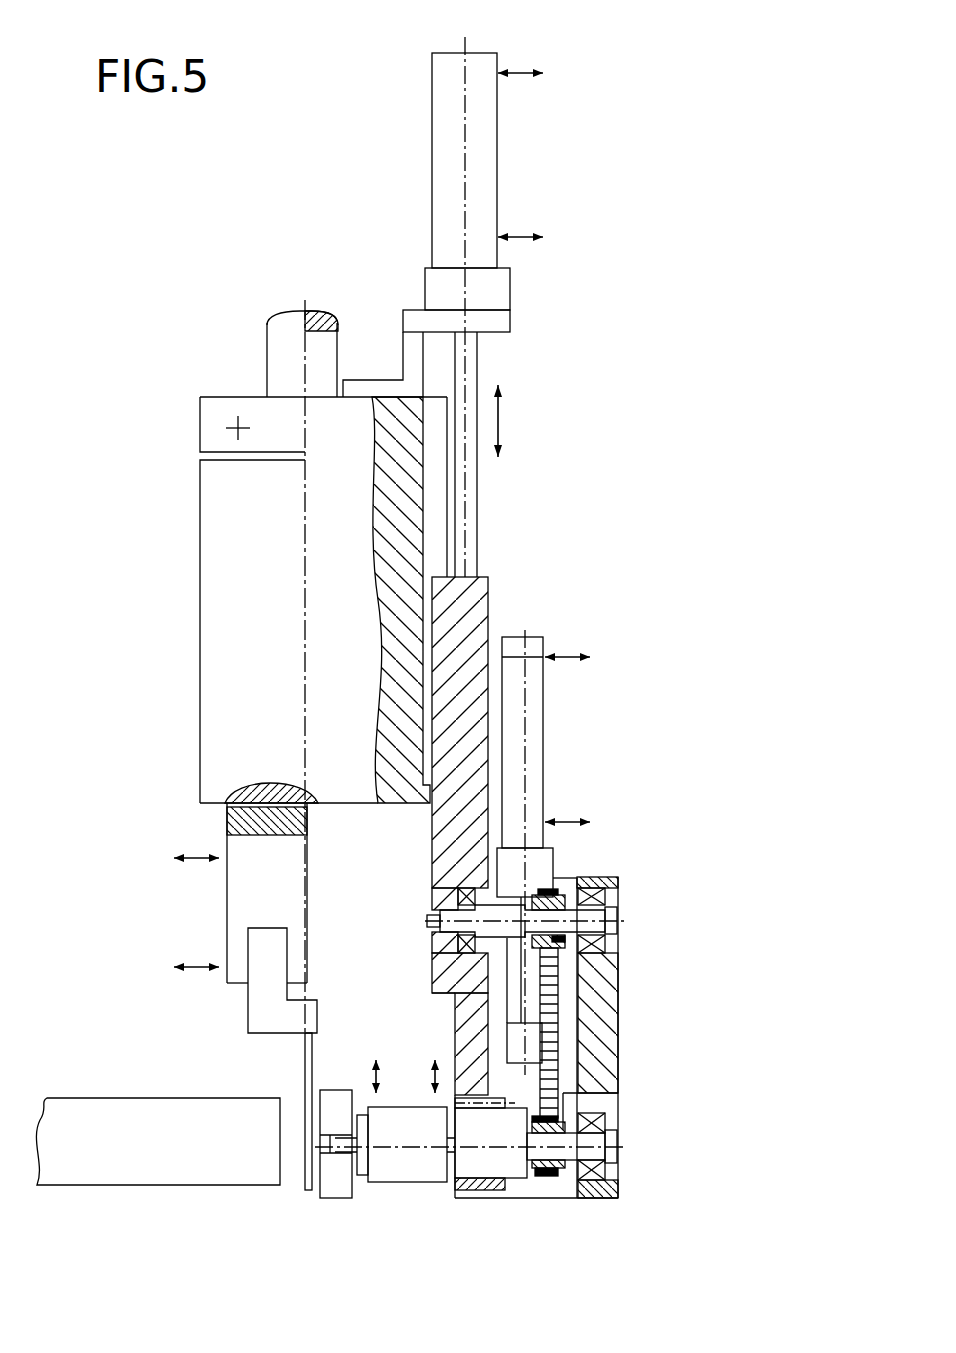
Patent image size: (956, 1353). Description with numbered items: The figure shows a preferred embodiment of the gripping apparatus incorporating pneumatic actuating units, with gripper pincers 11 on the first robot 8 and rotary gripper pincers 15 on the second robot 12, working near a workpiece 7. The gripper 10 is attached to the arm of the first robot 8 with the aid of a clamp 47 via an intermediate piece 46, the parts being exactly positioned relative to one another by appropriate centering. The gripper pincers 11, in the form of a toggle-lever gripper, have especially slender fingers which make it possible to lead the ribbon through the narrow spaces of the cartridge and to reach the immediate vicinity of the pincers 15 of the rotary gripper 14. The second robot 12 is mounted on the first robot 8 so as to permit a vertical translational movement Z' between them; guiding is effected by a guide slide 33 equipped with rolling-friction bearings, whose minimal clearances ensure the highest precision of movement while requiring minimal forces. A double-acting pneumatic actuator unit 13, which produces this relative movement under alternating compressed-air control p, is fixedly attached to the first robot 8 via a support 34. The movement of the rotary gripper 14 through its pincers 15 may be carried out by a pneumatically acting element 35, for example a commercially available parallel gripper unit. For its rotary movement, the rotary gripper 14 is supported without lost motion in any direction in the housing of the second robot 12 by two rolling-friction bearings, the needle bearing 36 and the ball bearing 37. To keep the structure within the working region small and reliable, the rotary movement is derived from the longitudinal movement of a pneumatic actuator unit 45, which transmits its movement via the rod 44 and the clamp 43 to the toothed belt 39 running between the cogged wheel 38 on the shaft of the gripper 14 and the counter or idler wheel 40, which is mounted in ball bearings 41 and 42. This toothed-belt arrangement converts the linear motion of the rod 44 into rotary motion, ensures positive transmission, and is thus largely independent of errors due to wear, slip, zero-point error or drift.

The workpiece 7 is at (188, 1142).
The first robot 8 is at (282, 360).
The gripper 10 is at (255, 907).
The gripper pincers 11 is at (272, 1023).
The second robot 12 is at (473, 612).
The double-acting pneumatic actuator unit 13 is at (490, 283).
The rotary gripper 14 is at (620, 1147).
The rotary gripper pincers 15 is at (332, 1202).
The guide slide 33 is at (437, 517).
The support 34 is at (413, 340).
The pneumatically acting element 35 is at (413, 1162).
The needle bearing 36 is at (487, 1195).
The ball bearing 37 is at (598, 1197).
The cogged wheel 38 is at (537, 1176).
The toothed belt 39 is at (605, 1098).
The idler wheel 40 is at (605, 933).
The ball bearing 41 is at (600, 877).
The ball bearing 42 is at (438, 930).
The clamp 43 is at (542, 1045).
The rod 44 is at (540, 1000).
The pneumatic actuator unit 45 is at (530, 692).
The intermediate piece 46 is at (222, 631).
The clamp 47 is at (213, 436).